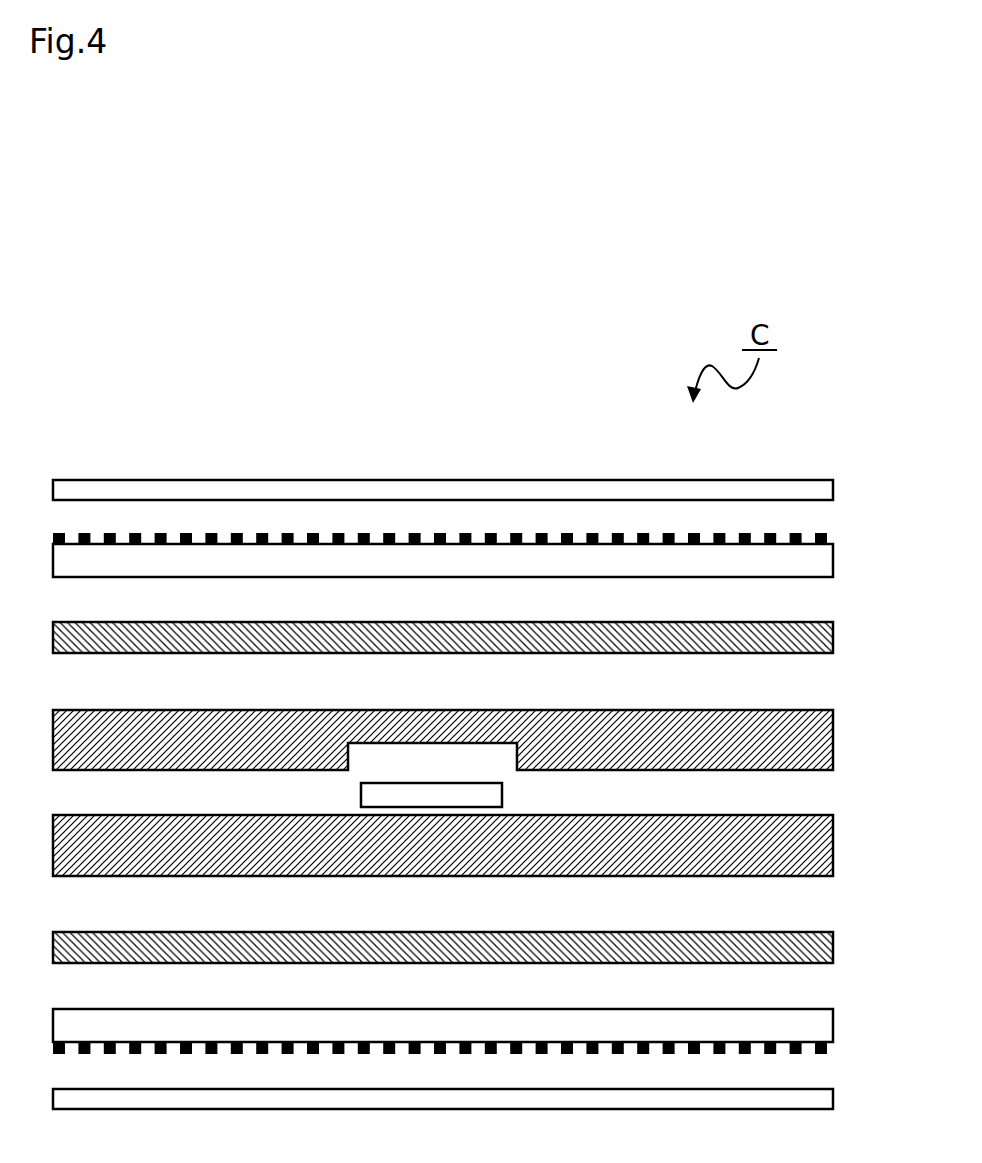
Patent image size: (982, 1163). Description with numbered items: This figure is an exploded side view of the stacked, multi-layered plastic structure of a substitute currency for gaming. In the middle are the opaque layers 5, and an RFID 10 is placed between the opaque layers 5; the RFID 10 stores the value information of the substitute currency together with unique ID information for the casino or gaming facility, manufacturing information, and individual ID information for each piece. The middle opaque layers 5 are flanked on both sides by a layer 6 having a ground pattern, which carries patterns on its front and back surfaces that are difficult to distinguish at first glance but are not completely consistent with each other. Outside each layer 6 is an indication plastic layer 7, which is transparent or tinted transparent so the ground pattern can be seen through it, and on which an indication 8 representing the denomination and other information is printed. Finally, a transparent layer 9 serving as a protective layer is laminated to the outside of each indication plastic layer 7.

The opaque layer 5 is at (833, 738).
The layer with ground pattern 6 is at (833, 637).
The indication plastic layer 7 is at (833, 560).
The indication 8 is at (828, 535).
The transparent layer 9 is at (833, 490).
The RFID 10 is at (502, 795).